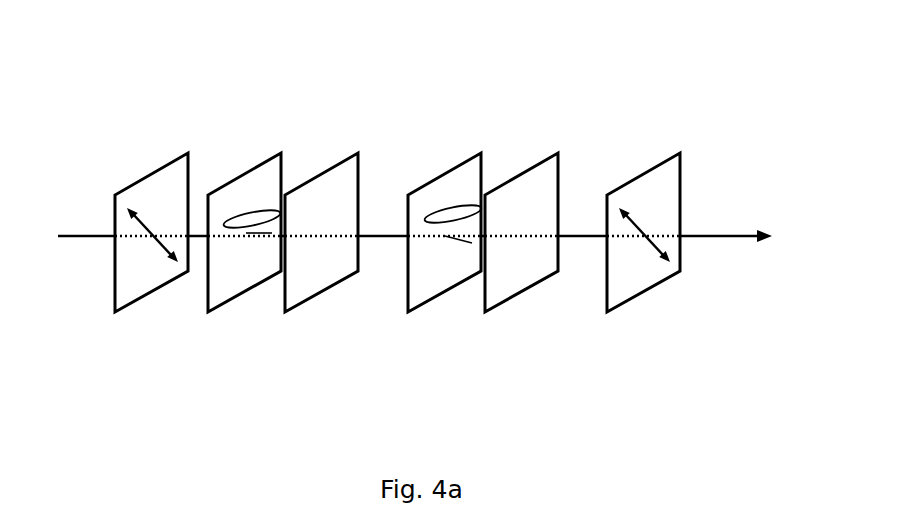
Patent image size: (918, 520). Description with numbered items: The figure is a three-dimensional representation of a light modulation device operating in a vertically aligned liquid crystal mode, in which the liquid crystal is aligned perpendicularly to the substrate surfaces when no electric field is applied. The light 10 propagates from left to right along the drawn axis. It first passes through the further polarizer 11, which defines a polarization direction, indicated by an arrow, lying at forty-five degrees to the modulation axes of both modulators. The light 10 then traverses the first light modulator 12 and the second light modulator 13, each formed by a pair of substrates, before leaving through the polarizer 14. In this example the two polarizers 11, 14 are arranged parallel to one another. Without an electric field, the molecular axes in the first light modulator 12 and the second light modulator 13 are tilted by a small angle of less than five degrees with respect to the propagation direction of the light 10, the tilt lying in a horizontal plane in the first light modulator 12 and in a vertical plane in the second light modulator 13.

The light 10 is at (722, 235).
The further polarizer 11 is at (122, 185).
The first light modulator 12 is at (212, 145).
The second light modulator 13 is at (418, 145).
The polarizer 14 is at (615, 185).